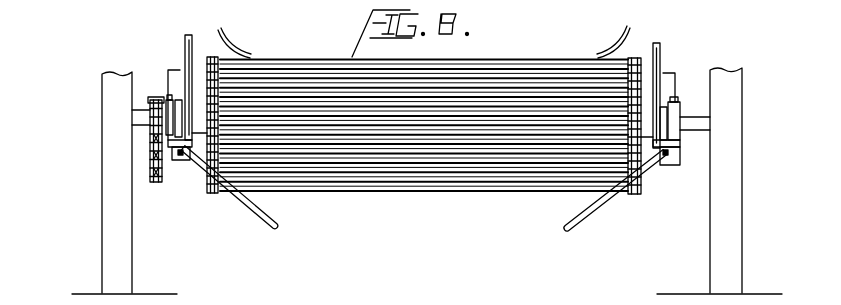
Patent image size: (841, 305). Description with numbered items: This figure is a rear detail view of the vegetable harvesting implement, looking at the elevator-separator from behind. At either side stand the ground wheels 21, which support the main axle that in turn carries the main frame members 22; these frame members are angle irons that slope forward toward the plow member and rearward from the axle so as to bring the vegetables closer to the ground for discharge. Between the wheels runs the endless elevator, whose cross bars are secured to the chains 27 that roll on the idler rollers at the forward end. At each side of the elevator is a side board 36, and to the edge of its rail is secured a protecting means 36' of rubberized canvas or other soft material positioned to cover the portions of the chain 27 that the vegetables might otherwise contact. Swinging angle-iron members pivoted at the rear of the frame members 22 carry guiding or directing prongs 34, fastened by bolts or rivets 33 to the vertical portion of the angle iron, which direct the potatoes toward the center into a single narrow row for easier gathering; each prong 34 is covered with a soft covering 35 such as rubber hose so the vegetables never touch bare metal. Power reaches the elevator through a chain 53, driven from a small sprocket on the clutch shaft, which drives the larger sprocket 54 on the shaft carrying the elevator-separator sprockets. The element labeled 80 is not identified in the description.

The ground wheels 21 is at (108, 210).
The main frame member 22 is at (180, 70).
The chains 27 is at (211, 193).
The bolts or rivets 33 is at (170, 95).
The guiding or directing prongs 34 is at (167, 162).
The soft covering 35 is at (263, 221).
The side board 36 is at (431, 82).
The protecting means 36' is at (414, 34).
The chain 53 is at (150, 98).
The larger sprocket 54 is at (150, 172).
The shaft 80 is at (704, 118).